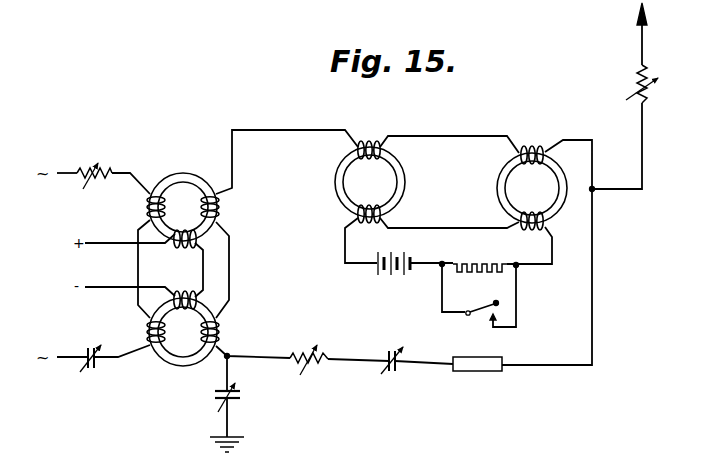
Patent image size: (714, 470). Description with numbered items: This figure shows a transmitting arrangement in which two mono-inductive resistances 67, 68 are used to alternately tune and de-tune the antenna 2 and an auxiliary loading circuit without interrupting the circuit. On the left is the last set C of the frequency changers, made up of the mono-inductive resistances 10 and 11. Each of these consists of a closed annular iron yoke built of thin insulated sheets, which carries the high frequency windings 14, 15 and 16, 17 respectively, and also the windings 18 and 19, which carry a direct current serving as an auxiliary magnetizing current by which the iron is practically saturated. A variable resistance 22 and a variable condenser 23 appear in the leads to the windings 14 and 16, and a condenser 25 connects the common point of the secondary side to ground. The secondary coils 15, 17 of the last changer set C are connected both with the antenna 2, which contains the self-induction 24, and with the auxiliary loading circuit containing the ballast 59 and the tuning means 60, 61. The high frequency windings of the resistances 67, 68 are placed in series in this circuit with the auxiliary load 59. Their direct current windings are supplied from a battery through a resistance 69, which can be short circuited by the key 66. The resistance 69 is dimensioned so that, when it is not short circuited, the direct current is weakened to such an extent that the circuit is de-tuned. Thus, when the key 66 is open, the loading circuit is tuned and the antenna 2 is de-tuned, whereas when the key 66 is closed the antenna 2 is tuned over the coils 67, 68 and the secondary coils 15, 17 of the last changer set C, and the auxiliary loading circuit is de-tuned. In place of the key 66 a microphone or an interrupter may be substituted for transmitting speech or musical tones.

The antenna 2 is at (638, 44).
The mono-inductive resistance 10 is at (183, 207).
The mono-inductive resistance 11 is at (183, 332).
The winding 14 is at (147, 206).
The secondary winding 15 is at (219, 206).
The winding 16 is at (147, 330).
The secondary winding 17 is at (219, 330).
The winding 18 is at (185, 248).
The winding 19 is at (184, 293).
The variable resistance 22 is at (94, 168).
The variable condenser 23 is at (103, 370).
The self-induction 24 is at (652, 84).
The variable condenser to ground 25 is at (236, 404).
The ballast 59 is at (479, 371).
The tuning means 60 is at (311, 365).
The tuning means 61 is at (400, 367).
The key 66 is at (482, 305).
The mono-inductive resistance 67 is at (397, 182).
The mono-inductive resistance 68 is at (498, 188).
The resistance 69 is at (480, 264).
The last set of frequency changers C is at (183, 194).